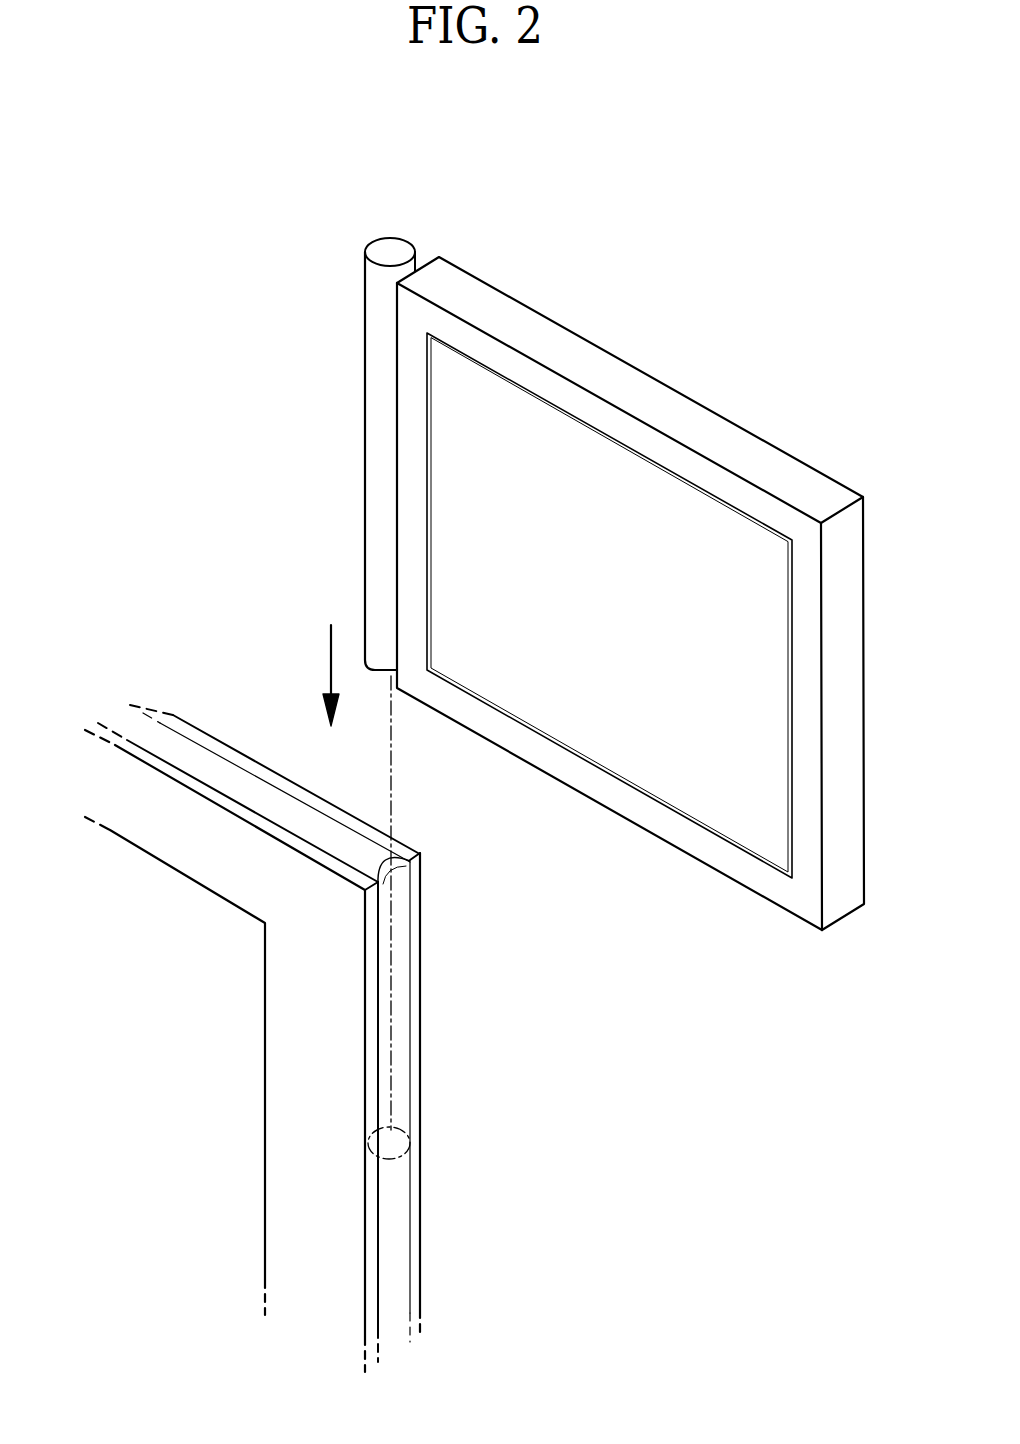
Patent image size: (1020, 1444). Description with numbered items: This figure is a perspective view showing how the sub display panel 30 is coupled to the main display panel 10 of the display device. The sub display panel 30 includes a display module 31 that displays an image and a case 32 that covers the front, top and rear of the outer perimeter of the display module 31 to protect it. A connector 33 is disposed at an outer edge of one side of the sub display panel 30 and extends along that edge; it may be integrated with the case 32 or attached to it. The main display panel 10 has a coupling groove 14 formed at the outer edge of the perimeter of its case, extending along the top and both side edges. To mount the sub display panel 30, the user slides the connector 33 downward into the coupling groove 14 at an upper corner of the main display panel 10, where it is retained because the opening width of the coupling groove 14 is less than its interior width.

The main display panel 10 is at (222, 1088).
The coupling groove 14 is at (262, 793).
The sub display panel 30 is at (709, 370).
The display module 31 is at (628, 762).
The case 32 is at (748, 870).
The connector 33 is at (390, 253).